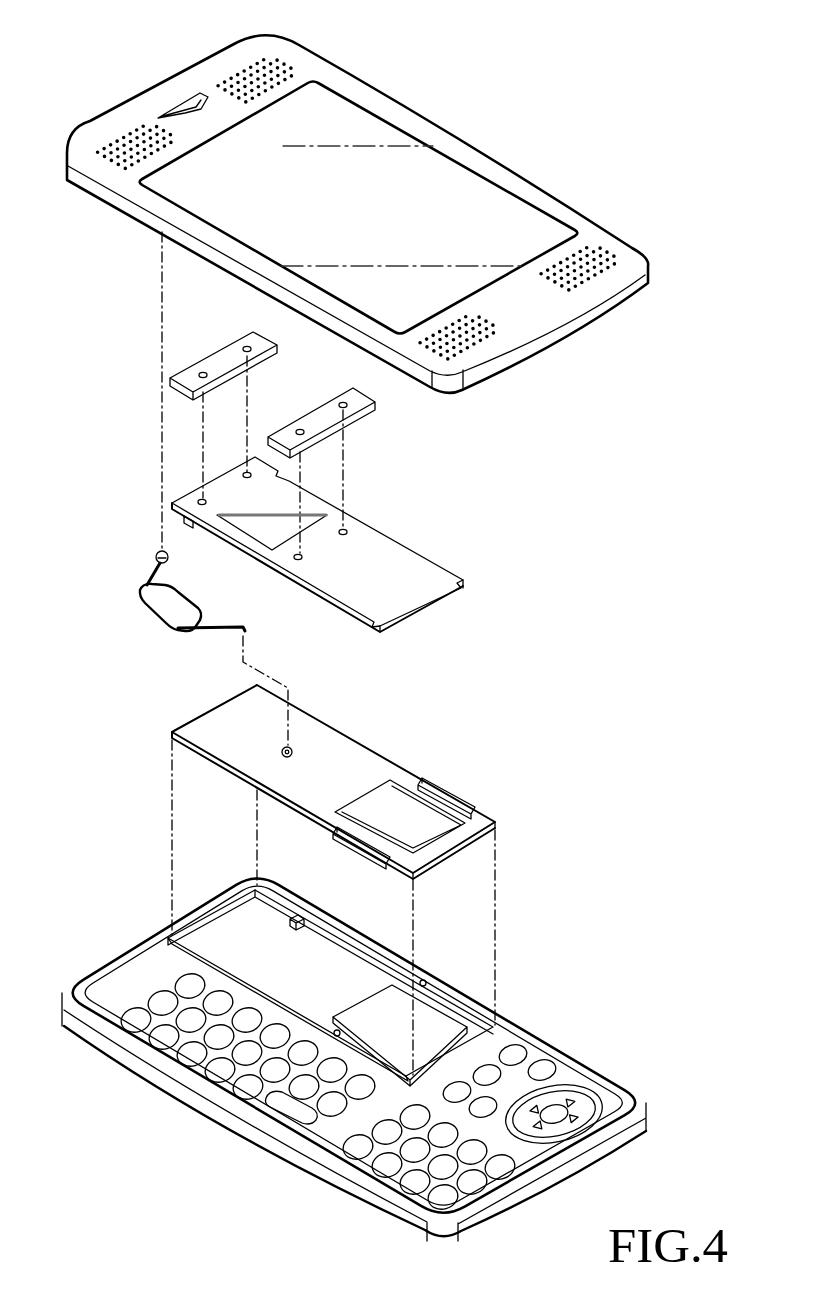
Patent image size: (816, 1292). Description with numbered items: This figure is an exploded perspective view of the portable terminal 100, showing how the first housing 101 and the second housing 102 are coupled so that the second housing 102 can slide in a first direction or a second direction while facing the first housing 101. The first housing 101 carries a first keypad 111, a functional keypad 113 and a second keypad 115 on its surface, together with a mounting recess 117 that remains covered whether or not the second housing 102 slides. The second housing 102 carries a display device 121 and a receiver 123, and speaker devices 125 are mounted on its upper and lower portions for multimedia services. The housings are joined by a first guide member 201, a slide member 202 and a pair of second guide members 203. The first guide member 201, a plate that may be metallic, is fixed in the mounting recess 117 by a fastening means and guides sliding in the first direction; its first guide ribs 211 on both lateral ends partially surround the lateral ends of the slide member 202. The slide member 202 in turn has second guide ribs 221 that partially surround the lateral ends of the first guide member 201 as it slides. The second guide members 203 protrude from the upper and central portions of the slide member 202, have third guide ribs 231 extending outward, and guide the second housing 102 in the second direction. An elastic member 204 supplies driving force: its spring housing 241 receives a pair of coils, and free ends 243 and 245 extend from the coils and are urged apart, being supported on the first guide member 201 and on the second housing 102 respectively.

The portable terminal 100 is at (597, 126).
The first housing 101 is at (352, 1059).
The second housing 102 is at (352, 214).
The first keypad 111 is at (358, 1148).
The functional keypad 113 is at (570, 1075).
The second keypad 115 is at (202, 1067).
The mounting recess 117 is at (445, 1010).
The display device 121 is at (338, 107).
The receiver 123 is at (183, 103).
The speaker devices 125 is at (118, 138).
The first guide member 201 is at (345, 791).
The slide member 202 is at (340, 544).
The second guide members 203 is at (282, 386).
The elastic member 204 is at (153, 604).
The first guide ribs 211 is at (450, 788).
The second guide ribs 221 is at (190, 523).
The third guide ribs 231 is at (218, 358).
The spring housing 241 is at (160, 610).
The first free end 243 is at (205, 631).
The second free end 245 is at (150, 568).